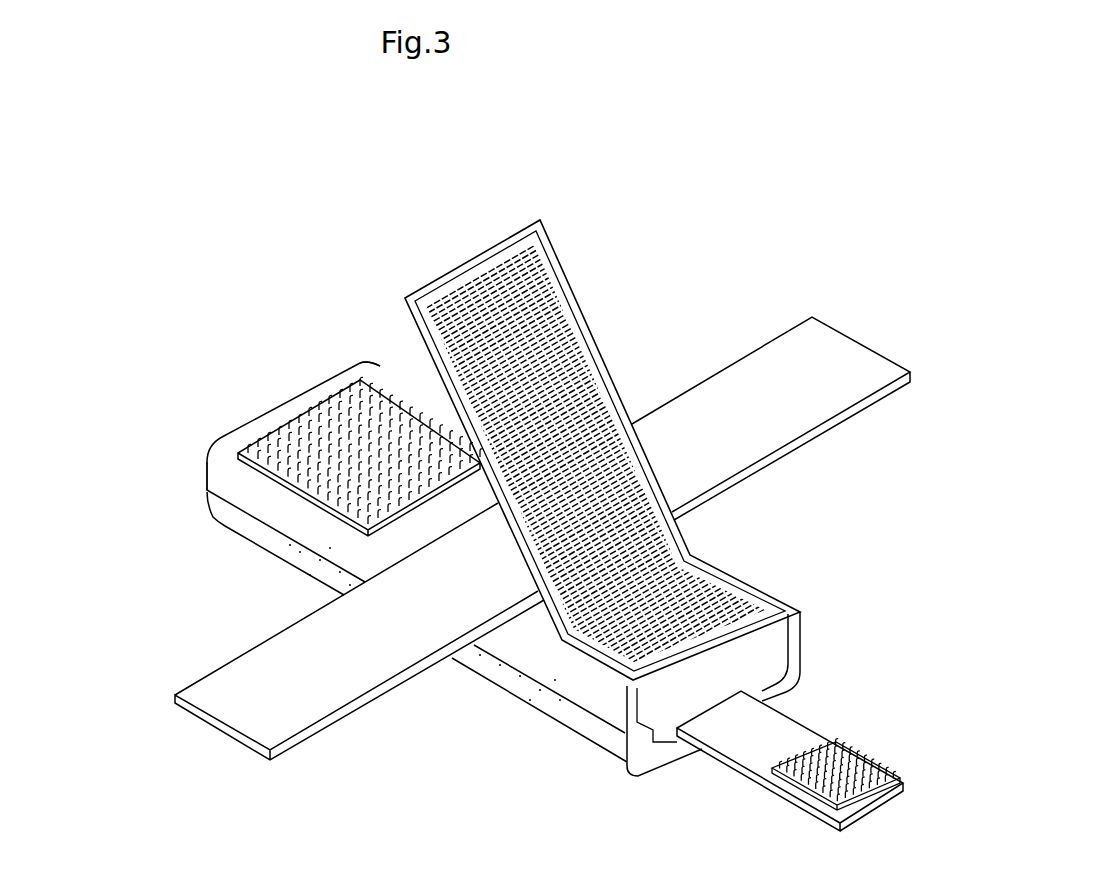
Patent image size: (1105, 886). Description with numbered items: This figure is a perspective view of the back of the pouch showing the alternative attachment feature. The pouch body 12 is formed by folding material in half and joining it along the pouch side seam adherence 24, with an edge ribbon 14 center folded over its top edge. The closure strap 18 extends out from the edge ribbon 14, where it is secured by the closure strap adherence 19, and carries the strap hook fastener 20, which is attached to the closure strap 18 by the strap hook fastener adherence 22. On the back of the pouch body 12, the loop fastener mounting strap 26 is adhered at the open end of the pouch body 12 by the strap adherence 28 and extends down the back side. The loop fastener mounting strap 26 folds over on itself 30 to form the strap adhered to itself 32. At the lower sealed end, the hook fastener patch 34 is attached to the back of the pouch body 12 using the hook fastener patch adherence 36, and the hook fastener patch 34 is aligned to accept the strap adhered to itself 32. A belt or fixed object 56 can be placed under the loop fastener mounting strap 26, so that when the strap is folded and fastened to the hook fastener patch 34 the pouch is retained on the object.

The pouch body 12 is at (495, 750).
The edge ribbon 14 is at (805, 617).
The closure strap 18 is at (783, 733).
The closure strap adherence 19 is at (682, 767).
The strap hook fastener 20 is at (887, 763).
The strap hook fastener adherence 22 is at (863, 797).
The pouch side seam adherence 24 is at (260, 528).
The loop fastener mounting strap 26 is at (562, 288).
The strap adherence 28 is at (575, 765).
The fold of loop fastener mounting strap 30 is at (359, 381).
The strap adhered to itself 32 is at (313, 313).
The hook fastener patch 34 is at (297, 420).
The hook fastener patch adherence 36 is at (247, 467).
The belt or fixed object 56 is at (890, 345).